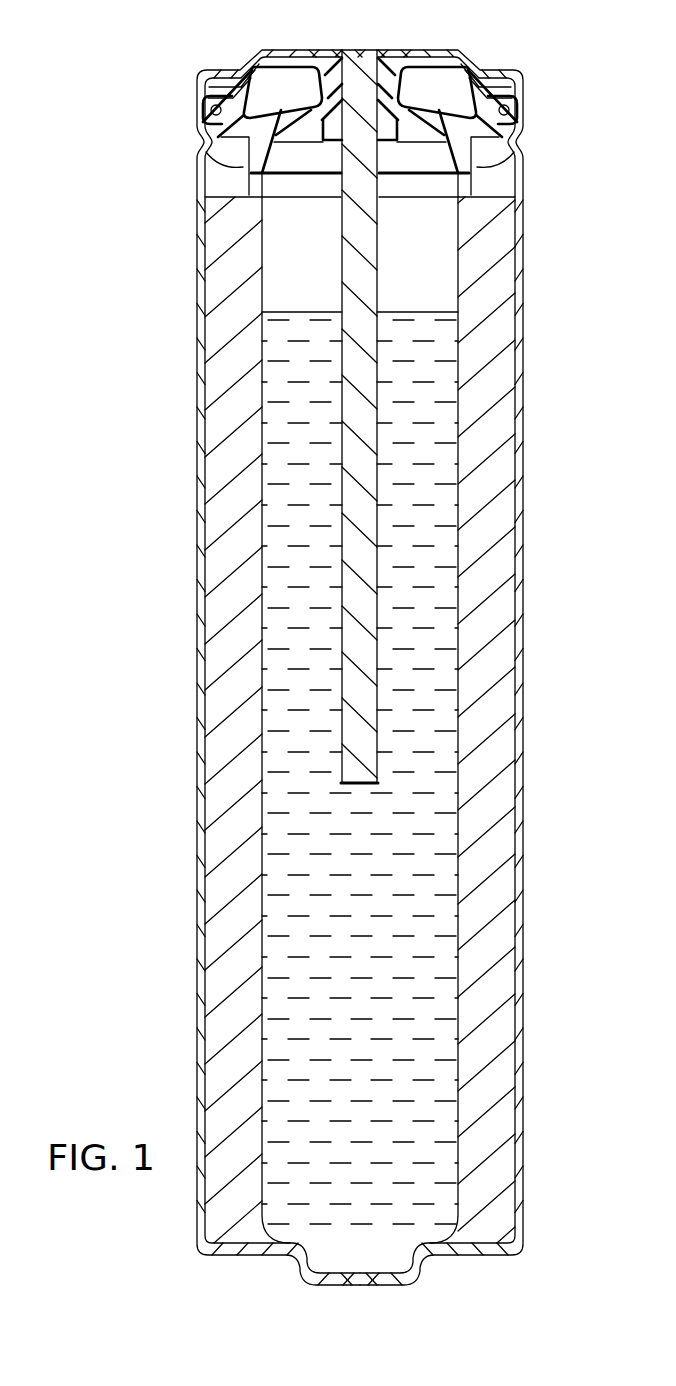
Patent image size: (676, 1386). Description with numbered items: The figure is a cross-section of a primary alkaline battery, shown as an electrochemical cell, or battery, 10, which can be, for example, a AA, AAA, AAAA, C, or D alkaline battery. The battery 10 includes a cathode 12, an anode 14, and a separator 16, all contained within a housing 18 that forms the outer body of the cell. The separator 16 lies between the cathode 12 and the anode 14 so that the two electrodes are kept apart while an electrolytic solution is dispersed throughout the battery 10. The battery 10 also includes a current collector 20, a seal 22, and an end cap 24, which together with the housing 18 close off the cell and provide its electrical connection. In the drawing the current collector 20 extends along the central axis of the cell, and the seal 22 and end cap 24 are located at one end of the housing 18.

The electrochemical cell 10 is at (111, 379).
The cathode 12 is at (503, 322).
The anode 14 is at (435, 966).
The separator 16 is at (262, 660).
The housing 18 is at (196, 494).
The current collector 20 is at (342, 266).
The seal 22 is at (210, 152).
The end cap 24 is at (440, 50).